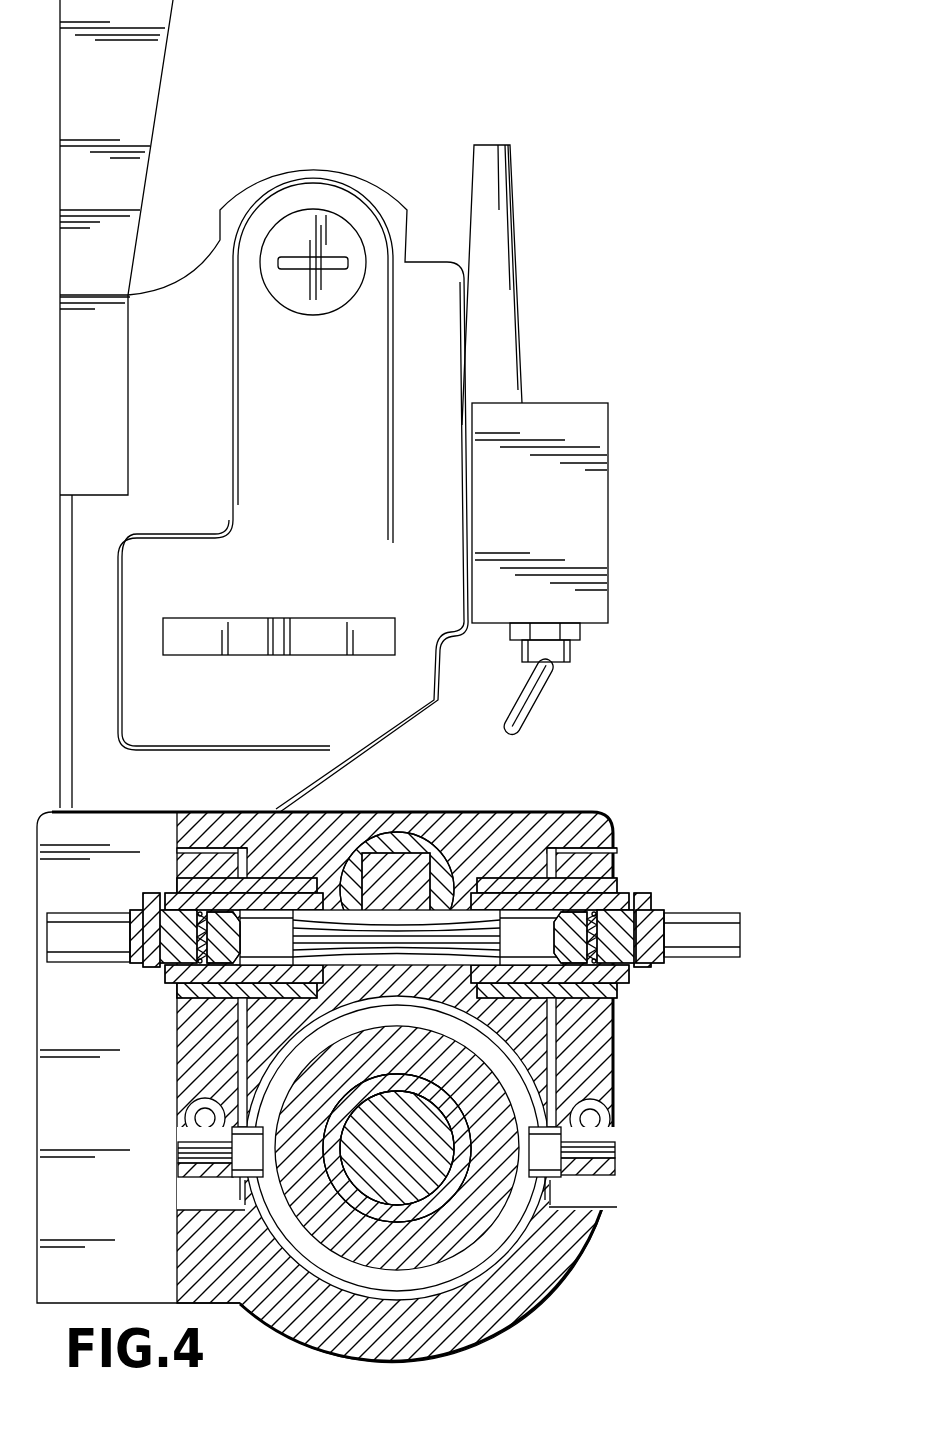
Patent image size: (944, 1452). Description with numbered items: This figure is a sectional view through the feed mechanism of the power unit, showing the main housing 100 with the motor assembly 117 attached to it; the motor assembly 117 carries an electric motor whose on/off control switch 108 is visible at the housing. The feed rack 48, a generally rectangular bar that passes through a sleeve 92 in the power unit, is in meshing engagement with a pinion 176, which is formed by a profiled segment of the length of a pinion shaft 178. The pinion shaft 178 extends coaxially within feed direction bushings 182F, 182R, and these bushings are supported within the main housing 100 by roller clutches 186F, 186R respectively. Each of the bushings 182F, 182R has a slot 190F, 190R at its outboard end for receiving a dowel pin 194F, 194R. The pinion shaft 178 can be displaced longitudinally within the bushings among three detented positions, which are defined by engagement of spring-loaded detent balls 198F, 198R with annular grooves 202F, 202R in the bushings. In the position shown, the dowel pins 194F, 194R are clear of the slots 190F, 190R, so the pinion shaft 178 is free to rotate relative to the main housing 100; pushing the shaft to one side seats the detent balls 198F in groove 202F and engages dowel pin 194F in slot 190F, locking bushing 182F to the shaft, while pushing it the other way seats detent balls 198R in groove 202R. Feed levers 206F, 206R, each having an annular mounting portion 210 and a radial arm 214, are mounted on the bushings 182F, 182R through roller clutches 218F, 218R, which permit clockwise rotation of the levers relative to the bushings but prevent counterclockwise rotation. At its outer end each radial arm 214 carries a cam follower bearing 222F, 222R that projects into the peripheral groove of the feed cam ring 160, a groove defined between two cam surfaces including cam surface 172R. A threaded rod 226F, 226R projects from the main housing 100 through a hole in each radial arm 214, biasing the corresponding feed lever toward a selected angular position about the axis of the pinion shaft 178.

The motor assembly 117 is at (345, 173).
The on/off control switch 108 is at (547, 683).
The main housing 100 is at (605, 827).
The annular mounting portion 210 is at (193, 847).
The radial arm 214 is at (613, 1098).
The feed cam ring 160 is at (545, 1285).
The cam surface 172R is at (540, 1240).
The feed rack 48 is at (425, 847).
The sleeve 92 is at (393, 835).
The pinion 176 is at (420, 960).
The pinion shaft 178 is at (740, 922).
The roller clutch 186R is at (270, 873).
The roller clutch 186F is at (507, 870).
The slot 190R is at (173, 893).
The slot 190F is at (620, 882).
The dowel pin 194R is at (157, 897).
The dowel pin 194F is at (650, 898).
The detent ball 198R is at (180, 918).
The detent ball 198F is at (650, 940).
The annular groove 202R is at (188, 997).
The annular groove 202F is at (563, 857).
The roller clutch 218R is at (197, 850).
The roller clutch 218F is at (617, 877).
The feed direction bushing 182R is at (180, 1040).
The feed direction bushing 182F is at (612, 1027).
The feed lever 206R is at (185, 1118).
The feed lever 206F is at (613, 1062).
The cam follower bearing 222R is at (245, 1170).
The cam follower bearing 222F is at (600, 1198).
The threaded rod 226R is at (237, 1165).
The threaded rod 226F is at (615, 1118).